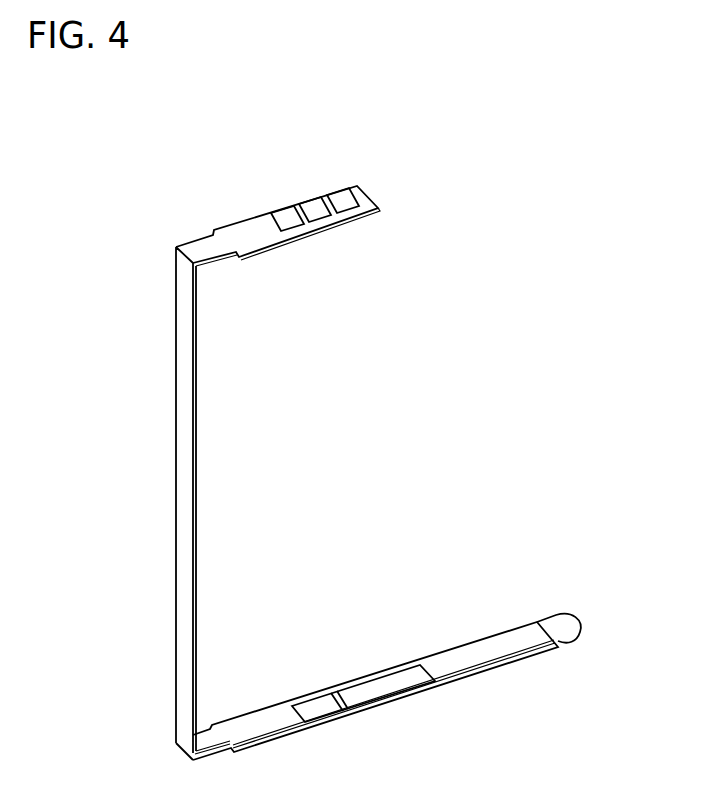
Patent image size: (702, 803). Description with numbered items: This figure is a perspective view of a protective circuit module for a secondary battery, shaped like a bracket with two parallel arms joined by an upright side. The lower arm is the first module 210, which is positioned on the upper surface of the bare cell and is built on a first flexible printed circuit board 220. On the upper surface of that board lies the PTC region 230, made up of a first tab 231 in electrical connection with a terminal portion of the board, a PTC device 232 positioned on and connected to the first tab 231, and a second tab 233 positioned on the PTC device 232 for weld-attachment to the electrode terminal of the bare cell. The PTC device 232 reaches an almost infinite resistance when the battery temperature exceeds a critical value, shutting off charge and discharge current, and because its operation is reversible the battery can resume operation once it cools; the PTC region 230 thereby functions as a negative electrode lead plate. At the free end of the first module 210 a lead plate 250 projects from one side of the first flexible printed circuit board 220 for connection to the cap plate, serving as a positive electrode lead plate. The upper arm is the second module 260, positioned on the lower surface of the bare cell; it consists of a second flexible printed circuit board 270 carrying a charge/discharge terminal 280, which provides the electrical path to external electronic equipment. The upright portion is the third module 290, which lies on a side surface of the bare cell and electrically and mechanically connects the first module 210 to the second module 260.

The first module 210 is at (407, 667).
The first flexible printed circuit board 220 is at (452, 668).
The positive temperature coefficient (PTC) region 230 is at (346, 654).
The first tab 231 is at (307, 703).
The PTC device 232 is at (336, 686).
The second tab 233 is at (386, 665).
The lead plate 250 is at (567, 621).
The second module 260 is at (278, 188).
The second flexible printed circuit board 270 is at (248, 228).
The charge/discharge terminal 280 is at (315, 210).
The third module 290 is at (334, 435).